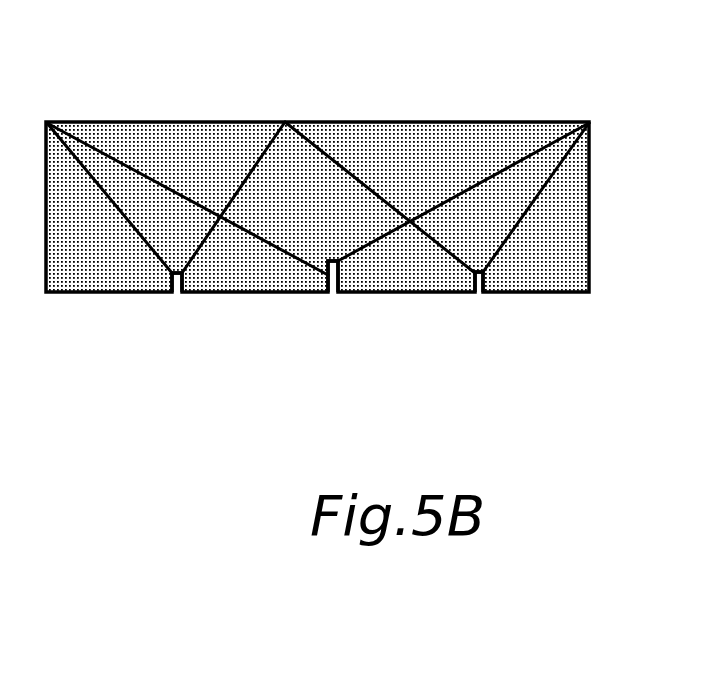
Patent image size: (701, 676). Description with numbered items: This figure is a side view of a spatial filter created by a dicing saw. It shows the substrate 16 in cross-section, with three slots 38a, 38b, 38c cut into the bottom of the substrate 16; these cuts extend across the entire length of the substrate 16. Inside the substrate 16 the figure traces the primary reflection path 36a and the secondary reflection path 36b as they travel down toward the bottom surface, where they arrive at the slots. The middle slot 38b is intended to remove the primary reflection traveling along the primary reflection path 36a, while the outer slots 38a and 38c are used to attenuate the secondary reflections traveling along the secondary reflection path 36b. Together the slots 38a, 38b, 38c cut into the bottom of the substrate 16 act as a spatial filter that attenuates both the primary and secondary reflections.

The substrate 16 is at (590, 268).
The primary reflection path 36a is at (125, 165).
The secondary reflection path 36b is at (342, 167).
The slot 38a is at (173, 293).
The slot 38b is at (327, 293).
The slot 38c is at (483, 293).